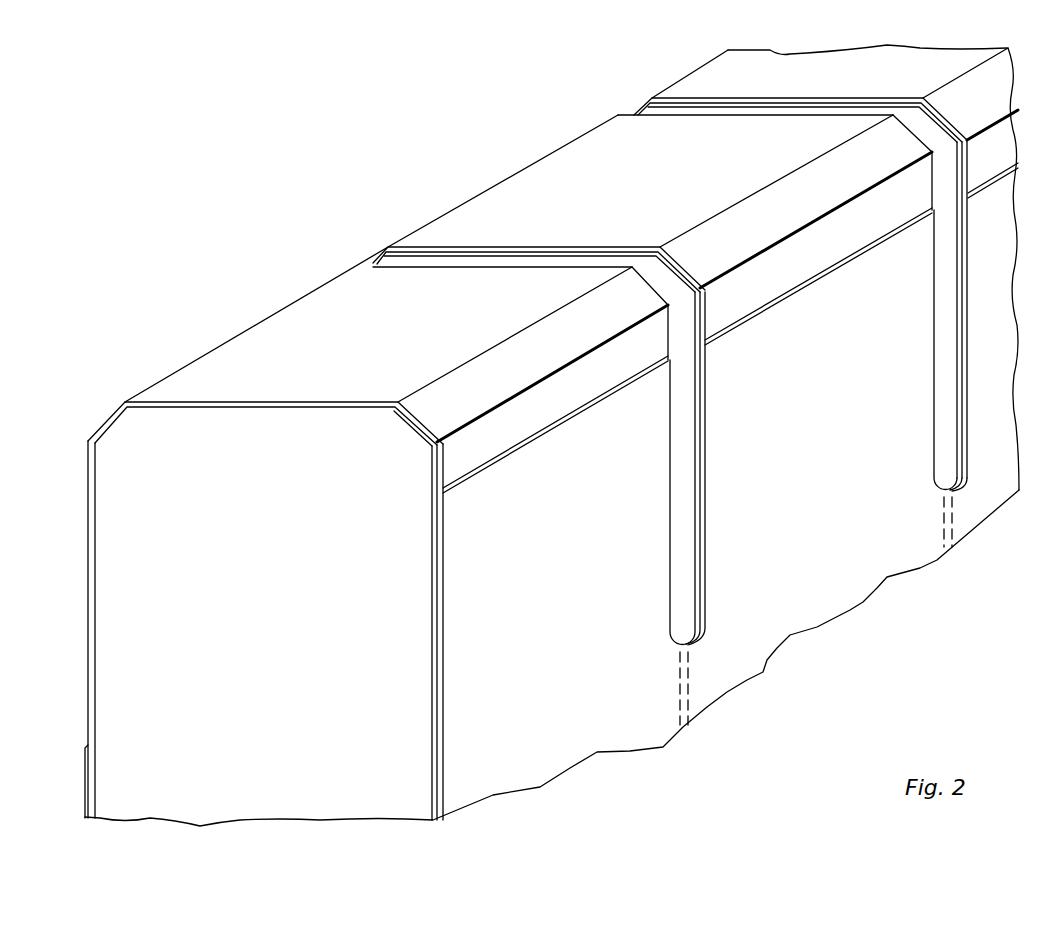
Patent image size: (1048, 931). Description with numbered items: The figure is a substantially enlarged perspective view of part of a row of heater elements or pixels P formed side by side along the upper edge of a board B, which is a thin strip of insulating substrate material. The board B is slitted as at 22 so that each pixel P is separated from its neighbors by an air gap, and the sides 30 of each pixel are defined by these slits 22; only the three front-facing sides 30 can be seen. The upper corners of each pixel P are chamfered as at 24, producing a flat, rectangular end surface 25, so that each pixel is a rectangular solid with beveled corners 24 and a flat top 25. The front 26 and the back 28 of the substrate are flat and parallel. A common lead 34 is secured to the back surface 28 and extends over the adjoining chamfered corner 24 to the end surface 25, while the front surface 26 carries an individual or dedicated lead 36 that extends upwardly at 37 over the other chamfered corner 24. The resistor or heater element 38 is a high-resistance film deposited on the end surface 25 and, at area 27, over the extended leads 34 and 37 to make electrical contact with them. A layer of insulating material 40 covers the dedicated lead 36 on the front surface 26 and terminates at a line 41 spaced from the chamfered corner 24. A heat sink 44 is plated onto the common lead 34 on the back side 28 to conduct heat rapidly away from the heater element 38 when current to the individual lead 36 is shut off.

The slit 22 is at (645, 263).
The chamfered corner 24 is at (108, 420).
The end surface 25 is at (253, 410).
The front surface 26 is at (440, 665).
The contact area 27 is at (522, 363).
The back surface 28 is at (100, 594).
The side 30 is at (240, 625).
The common lead 34 is at (110, 430).
The individual lead 36 is at (510, 433).
The upward extension of individual lead 37 is at (424, 424).
The heater element 38 is at (370, 340).
The insulating layer 40 is at (545, 603).
The termination line 41 is at (589, 405).
The heat sink 44 is at (85, 775).
The pixel P is at (250, 312).
The board B is at (840, 642).